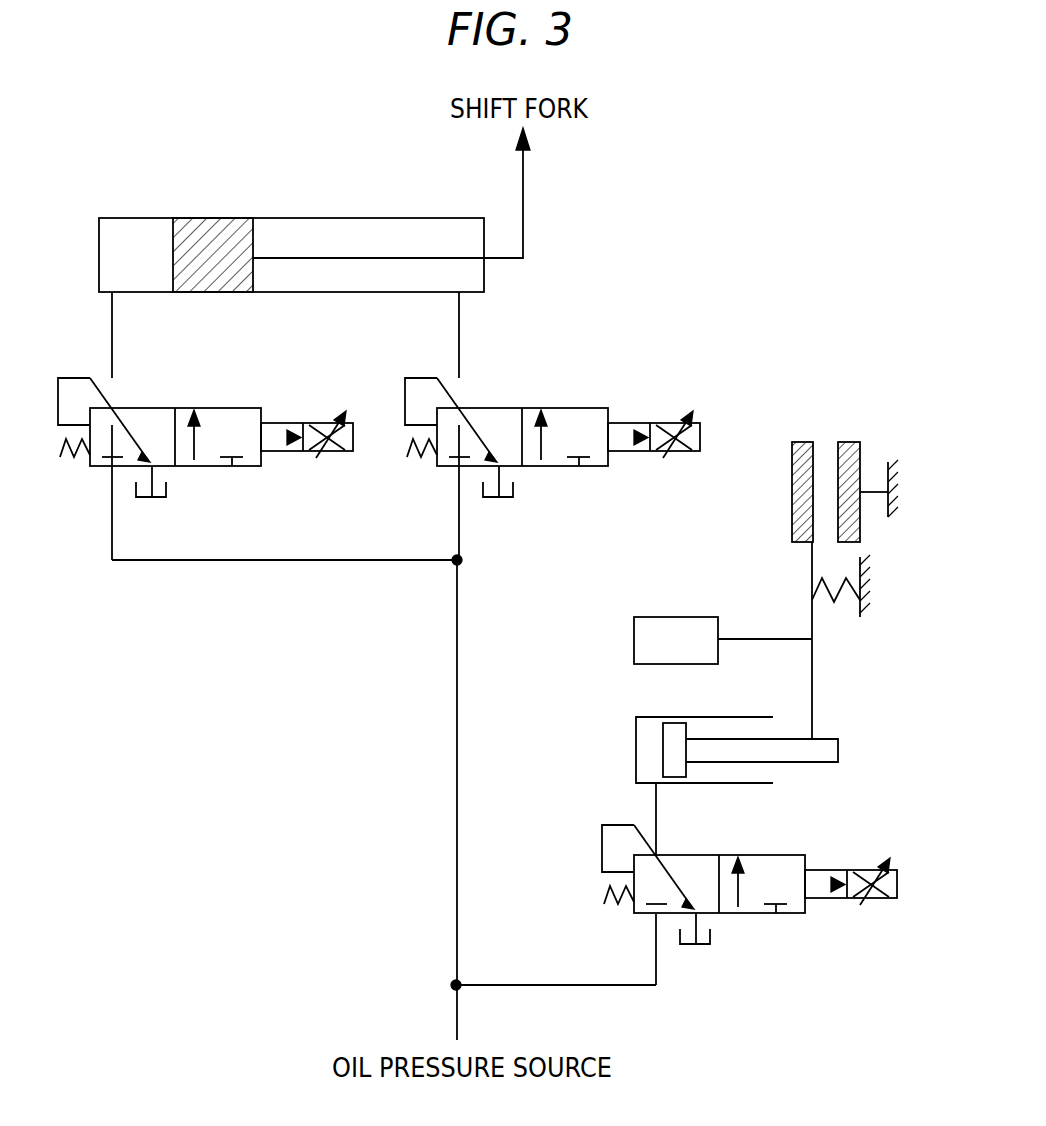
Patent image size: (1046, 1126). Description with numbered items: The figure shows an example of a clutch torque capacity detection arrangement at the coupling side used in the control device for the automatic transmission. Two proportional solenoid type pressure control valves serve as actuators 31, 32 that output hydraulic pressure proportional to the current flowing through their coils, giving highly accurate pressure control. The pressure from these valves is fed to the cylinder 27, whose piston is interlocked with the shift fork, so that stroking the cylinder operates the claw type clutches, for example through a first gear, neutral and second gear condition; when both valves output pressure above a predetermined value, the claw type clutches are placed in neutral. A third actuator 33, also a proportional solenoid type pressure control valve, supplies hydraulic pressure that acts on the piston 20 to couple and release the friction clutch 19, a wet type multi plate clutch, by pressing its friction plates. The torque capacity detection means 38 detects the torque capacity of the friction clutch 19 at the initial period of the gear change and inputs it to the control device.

The cylinder 27 is at (143, 218).
The actuator 31 is at (153, 408).
The actuator 32 is at (578, 408).
The actuator 33 is at (755, 915).
The torque capacity detection means 38 is at (679, 617).
The friction clutch 19 is at (803, 442).
The piston 20 is at (636, 745).